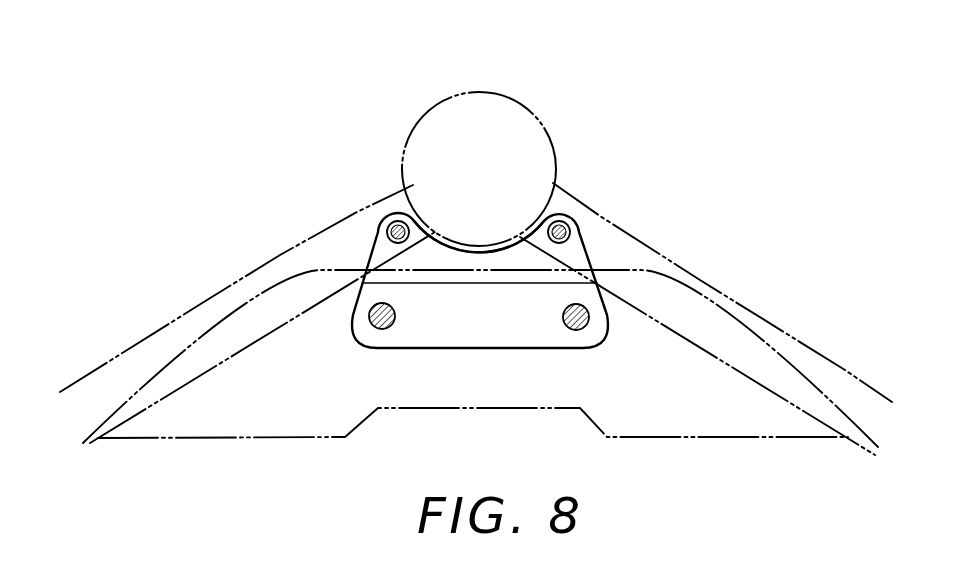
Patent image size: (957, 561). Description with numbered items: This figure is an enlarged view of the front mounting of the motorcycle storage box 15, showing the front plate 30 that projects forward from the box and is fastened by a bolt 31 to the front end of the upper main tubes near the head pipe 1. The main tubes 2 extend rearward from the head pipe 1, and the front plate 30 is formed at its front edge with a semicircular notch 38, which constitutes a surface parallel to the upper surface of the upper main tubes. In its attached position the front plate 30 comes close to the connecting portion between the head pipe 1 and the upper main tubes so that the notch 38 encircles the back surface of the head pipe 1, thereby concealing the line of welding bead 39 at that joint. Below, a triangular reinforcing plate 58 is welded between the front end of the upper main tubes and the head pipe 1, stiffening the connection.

The head pipe 1 is at (477, 92).
The main tubes 2 is at (613, 252).
The storage box 15 is at (747, 332).
The front plate 30 is at (522, 333).
The bolt 31 is at (386, 228).
The semicircular notch 38 is at (482, 247).
The line of welding bead 39 is at (408, 198).
The triangular reinforcing plate 58 is at (677, 413).